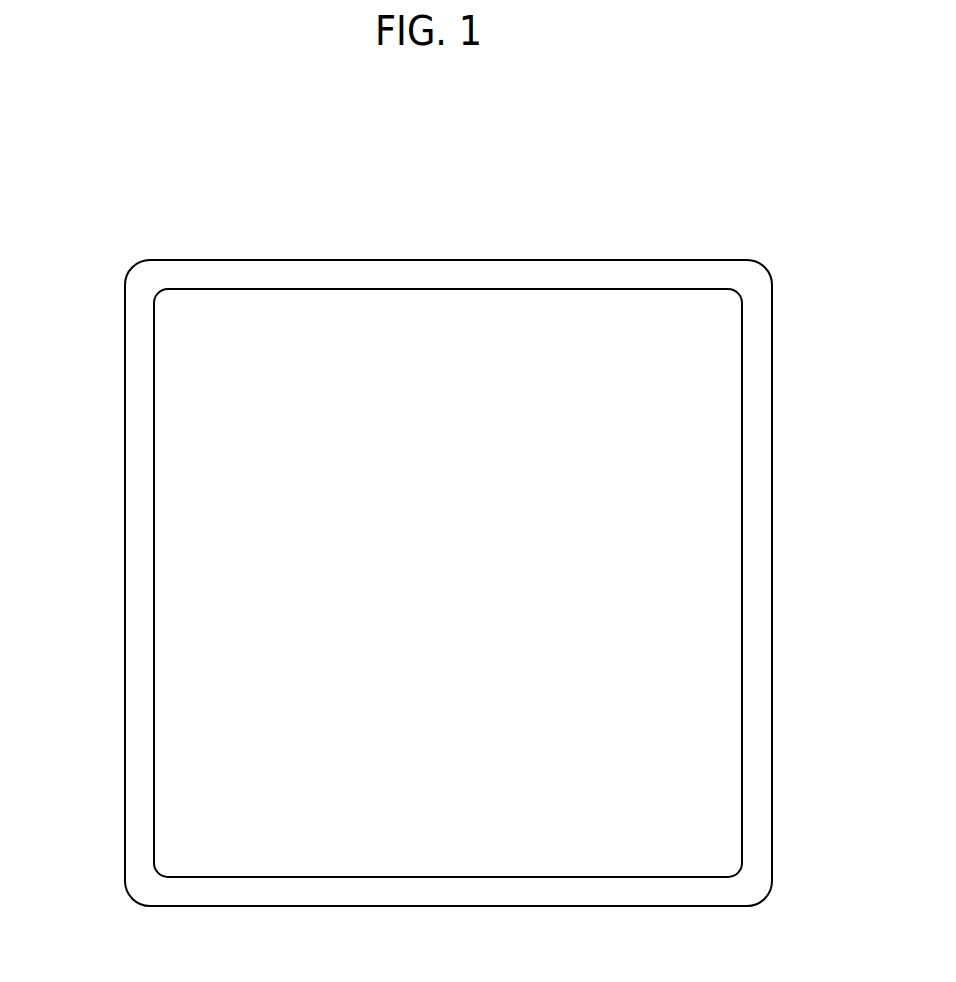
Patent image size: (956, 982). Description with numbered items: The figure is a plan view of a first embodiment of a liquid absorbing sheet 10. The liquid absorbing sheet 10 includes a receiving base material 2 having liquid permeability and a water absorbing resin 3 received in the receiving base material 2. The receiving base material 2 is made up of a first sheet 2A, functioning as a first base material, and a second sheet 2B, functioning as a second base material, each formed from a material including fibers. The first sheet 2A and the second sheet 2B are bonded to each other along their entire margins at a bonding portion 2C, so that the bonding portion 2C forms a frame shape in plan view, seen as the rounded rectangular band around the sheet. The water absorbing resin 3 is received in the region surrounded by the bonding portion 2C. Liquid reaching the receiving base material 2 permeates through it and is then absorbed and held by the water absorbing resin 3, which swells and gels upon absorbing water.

The liquid absorbing sheet 10 is at (679, 186).
The receiving base material 2 is at (695, 586).
The first sheet 2A is at (193, 378).
The second sheet 2B is at (190, 785).
The bonding portion 2C is at (143, 580).
The water absorbing resin 3 is at (393, 323).